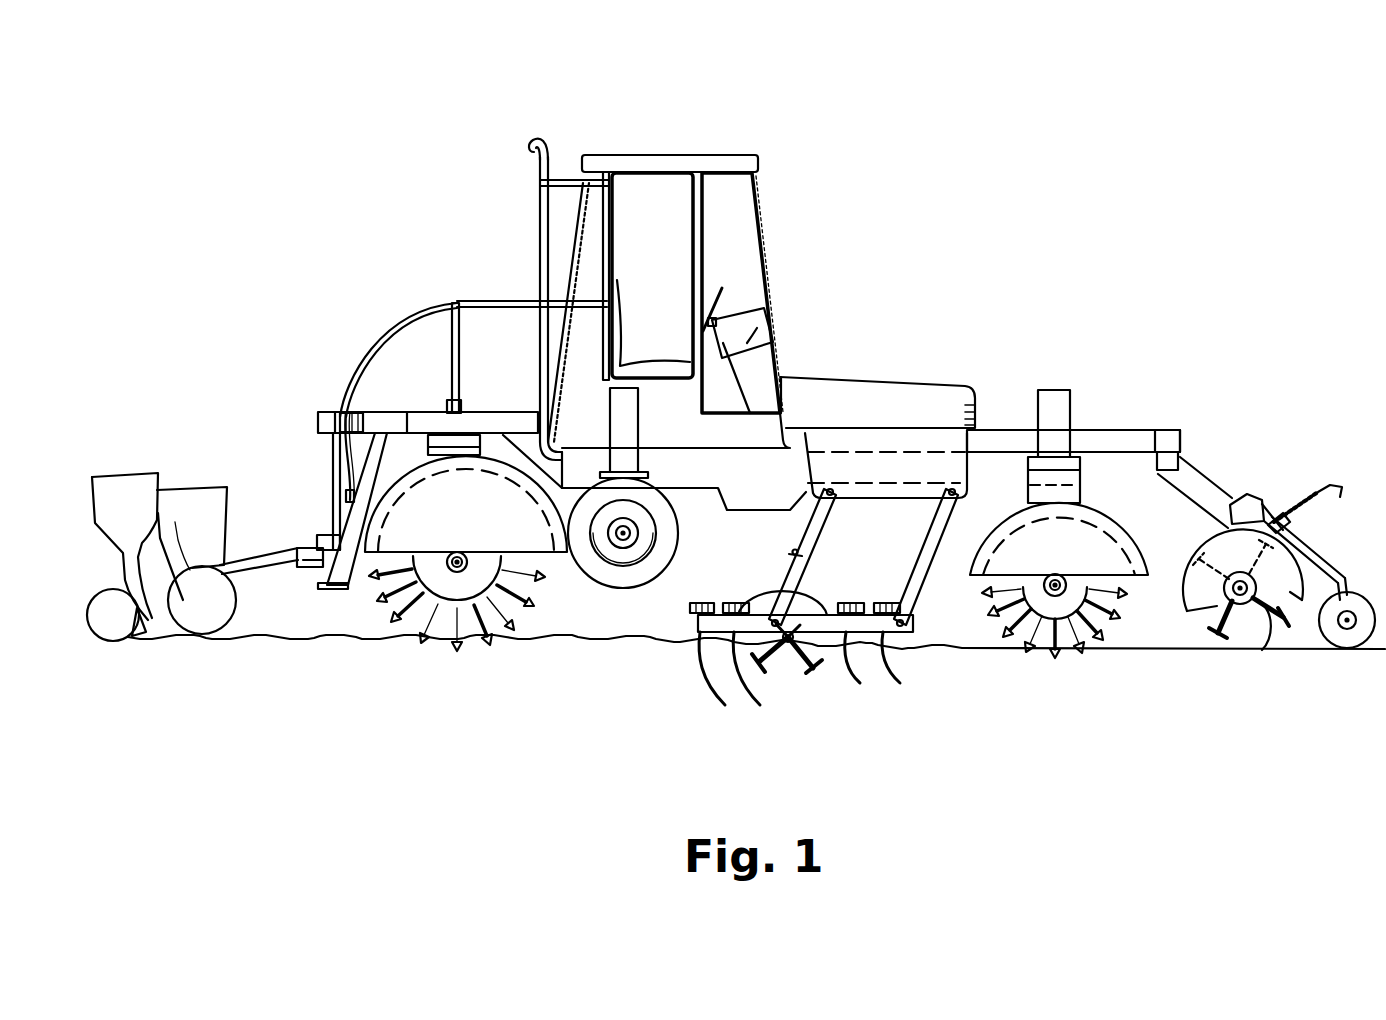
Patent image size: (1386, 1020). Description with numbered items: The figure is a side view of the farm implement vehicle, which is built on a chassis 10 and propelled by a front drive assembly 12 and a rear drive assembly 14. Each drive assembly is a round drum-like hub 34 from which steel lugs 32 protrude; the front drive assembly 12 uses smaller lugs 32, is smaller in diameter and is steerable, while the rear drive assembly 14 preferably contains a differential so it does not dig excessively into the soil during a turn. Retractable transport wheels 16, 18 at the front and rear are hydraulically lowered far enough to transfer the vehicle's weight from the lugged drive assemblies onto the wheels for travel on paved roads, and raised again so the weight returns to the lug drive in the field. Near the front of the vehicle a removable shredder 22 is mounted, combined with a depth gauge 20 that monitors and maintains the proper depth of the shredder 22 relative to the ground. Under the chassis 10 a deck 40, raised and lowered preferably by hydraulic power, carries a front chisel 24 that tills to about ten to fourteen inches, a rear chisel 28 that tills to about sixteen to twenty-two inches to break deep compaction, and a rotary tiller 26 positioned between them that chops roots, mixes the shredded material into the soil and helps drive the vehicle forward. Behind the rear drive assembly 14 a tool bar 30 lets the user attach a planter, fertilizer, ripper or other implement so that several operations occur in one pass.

The chassis 10 is at (894, 386).
The front drive assembly 12 is at (1014, 645).
The rear drive assembly 14 is at (407, 634).
The front transport wheel 16 is at (1094, 503).
The rear transport wheel 18 is at (631, 580).
The depth gauge 20 is at (1347, 651).
The shredder 22 is at (1241, 652).
The front chisel 24 is at (892, 664).
The rotary tiller 26 is at (830, 680).
The rear chisel 28 is at (710, 690).
The tool bar 30 is at (317, 545).
The steel lugs 32 is at (458, 653).
The drum-like hub 34 is at (543, 640).
The deck 40 is at (766, 624).